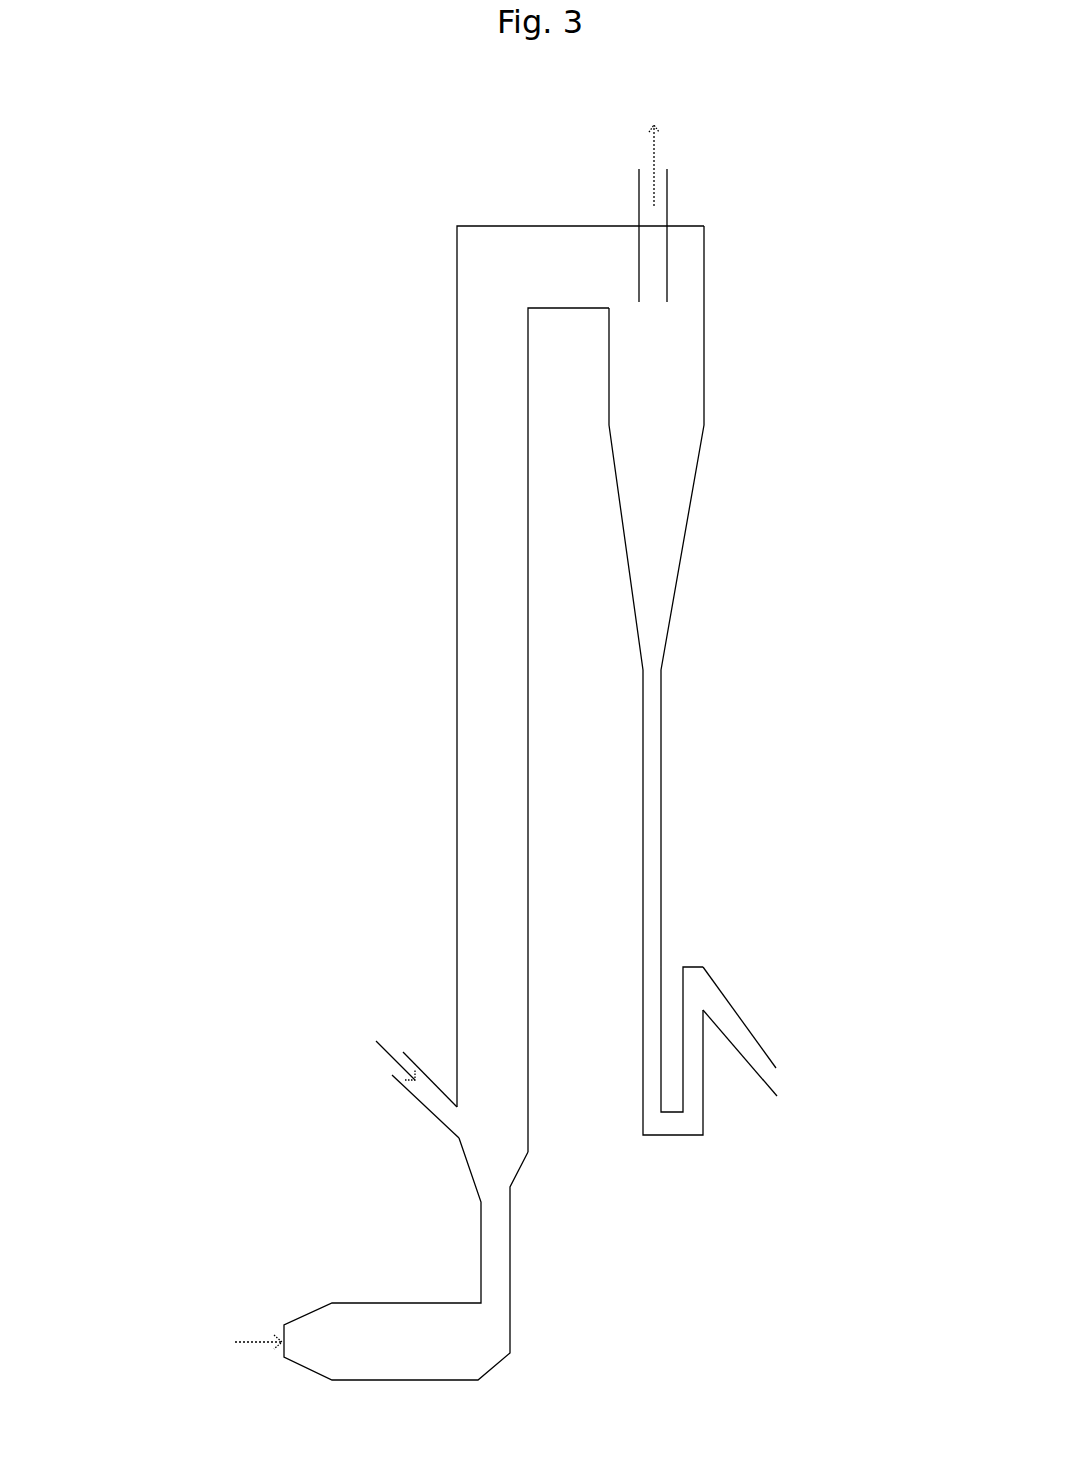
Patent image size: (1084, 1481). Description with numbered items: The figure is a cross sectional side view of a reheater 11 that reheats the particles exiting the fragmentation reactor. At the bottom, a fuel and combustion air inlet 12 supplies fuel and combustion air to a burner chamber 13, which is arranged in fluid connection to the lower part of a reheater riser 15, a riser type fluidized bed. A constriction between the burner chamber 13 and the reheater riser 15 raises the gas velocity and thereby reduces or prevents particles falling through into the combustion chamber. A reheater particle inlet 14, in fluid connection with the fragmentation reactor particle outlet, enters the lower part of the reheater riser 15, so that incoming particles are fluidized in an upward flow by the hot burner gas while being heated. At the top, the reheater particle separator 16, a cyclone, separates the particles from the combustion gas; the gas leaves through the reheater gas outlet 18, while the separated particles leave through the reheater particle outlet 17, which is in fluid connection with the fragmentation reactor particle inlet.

The reheater 11 is at (300, 257).
The fuel and combustion air inlet 12 is at (237, 1332).
The burner chamber 13 is at (390, 1295).
The reheater particle inlet 14 is at (374, 1050).
The reheater riser 15 is at (452, 808).
The reheater particle separator 16 is at (715, 402).
The reheater particle outlet 17 is at (782, 1080).
The reheater gas outlet 18 is at (668, 131).